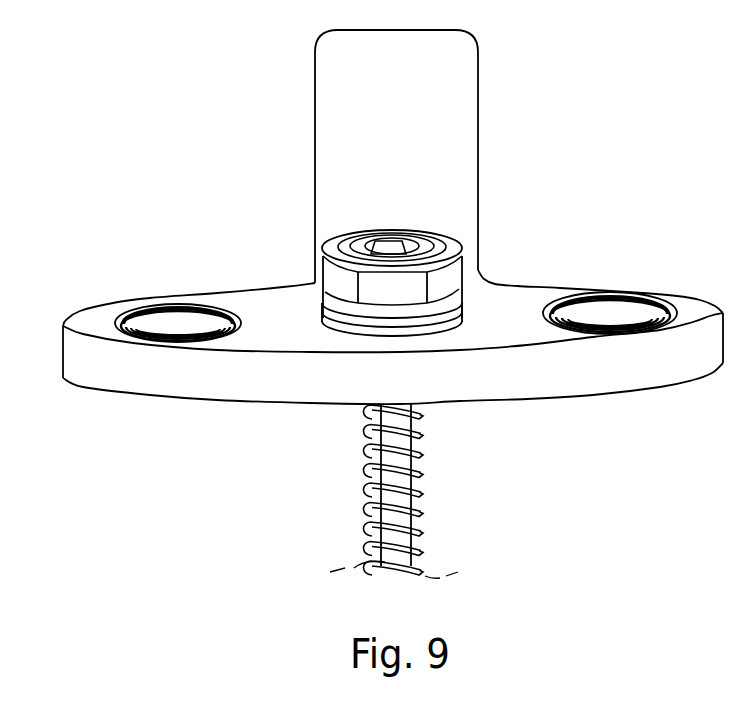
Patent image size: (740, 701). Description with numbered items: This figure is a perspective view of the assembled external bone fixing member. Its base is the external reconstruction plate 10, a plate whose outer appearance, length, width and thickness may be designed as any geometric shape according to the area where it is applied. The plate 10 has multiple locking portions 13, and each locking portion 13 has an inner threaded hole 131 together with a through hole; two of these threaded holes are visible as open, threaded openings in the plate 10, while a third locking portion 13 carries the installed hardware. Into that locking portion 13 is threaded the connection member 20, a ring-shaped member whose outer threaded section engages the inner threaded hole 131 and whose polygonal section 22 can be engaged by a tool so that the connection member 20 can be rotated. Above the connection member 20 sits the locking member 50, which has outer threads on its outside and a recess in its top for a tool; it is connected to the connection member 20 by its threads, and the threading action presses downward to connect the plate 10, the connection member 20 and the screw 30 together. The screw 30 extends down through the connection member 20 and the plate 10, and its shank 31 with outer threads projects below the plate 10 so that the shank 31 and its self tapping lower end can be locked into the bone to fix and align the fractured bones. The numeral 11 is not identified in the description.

The external reconstruction plate 10 is at (295, 142).
The base plate 11 is at (485, 297).
The locking portion 13 is at (128, 280).
The inner threaded hole 131 is at (157, 307).
The connection member 20 is at (396, 244).
The polygonal section 22 is at (335, 280).
The locking member 50 is at (392, 240).
The screw 30 is at (388, 491).
The shank 31 is at (415, 522).